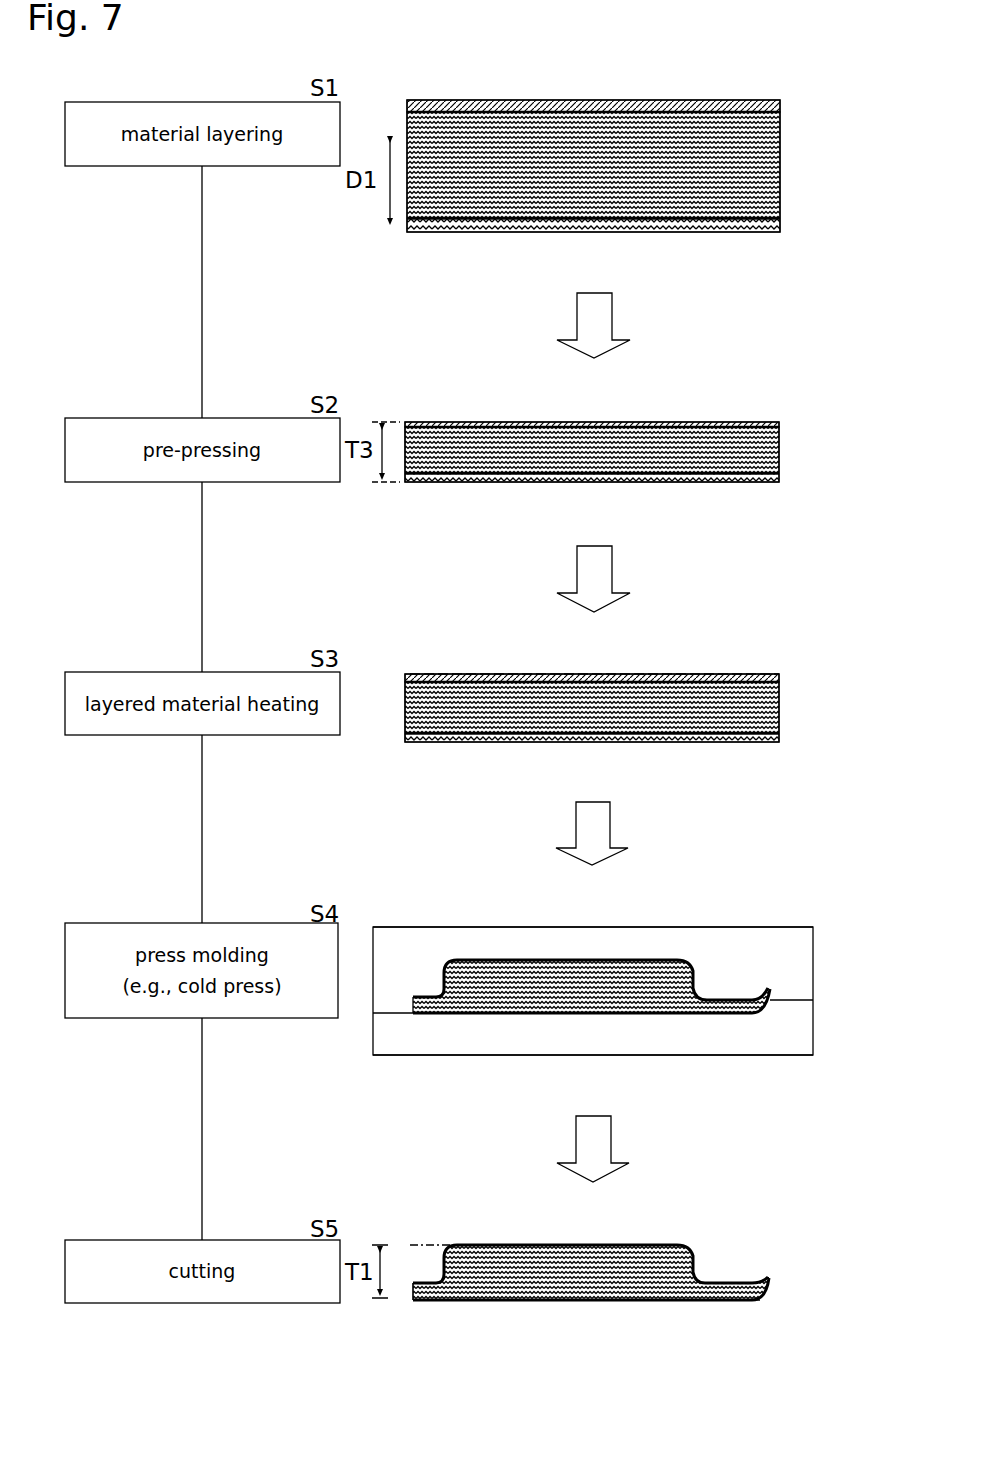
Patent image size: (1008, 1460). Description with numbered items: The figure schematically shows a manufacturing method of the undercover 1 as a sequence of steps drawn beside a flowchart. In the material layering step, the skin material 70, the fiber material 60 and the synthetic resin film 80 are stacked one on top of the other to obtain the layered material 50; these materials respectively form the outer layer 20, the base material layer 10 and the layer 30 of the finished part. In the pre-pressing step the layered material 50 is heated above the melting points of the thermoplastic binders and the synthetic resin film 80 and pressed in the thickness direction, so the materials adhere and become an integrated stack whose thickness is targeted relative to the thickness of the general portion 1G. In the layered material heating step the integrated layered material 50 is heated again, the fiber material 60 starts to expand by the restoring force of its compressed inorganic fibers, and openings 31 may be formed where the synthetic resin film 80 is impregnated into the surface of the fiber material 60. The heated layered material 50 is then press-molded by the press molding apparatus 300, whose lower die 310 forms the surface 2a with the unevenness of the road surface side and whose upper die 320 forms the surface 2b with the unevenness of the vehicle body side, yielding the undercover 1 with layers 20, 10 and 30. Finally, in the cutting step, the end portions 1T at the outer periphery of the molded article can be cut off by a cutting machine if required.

The layered material 50 is at (463, 88).
The synthetic resin film 80 is at (782, 103).
The fiber material 60 is at (782, 153).
The skin material 70 is at (782, 228).
The openings 31 is at (723, 677).
The press molding apparatus 300 is at (430, 912).
The die 320 is at (733, 926).
The die 310 is at (730, 1056).
The layer 30 is at (688, 958).
The base material layer 10 is at (702, 973).
The outer layer 20 is at (686, 1016).
The surface 2b is at (578, 963).
The surface 2a is at (577, 1017).
The end portion 1T is at (428, 1016).
The general portion 1G is at (527, 1016).
The undercover 1 is at (463, 1227).